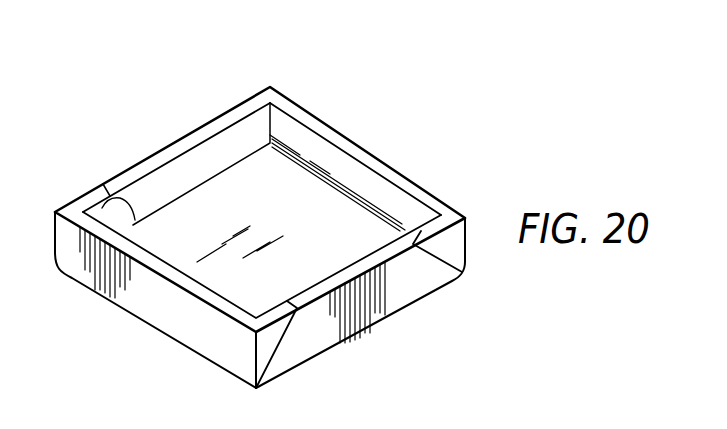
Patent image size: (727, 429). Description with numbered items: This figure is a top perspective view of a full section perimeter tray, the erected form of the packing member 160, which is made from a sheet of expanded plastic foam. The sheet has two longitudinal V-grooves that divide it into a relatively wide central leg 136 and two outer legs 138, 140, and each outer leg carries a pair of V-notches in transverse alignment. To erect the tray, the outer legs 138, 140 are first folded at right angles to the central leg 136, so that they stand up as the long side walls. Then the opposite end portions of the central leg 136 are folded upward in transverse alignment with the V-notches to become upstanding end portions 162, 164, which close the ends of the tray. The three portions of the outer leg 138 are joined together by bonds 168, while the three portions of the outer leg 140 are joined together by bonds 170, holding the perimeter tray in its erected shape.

The packing member 160 is at (381, 147).
The outer leg 138 is at (183, 136).
The upstanding end portion 162 is at (412, 185).
The upstanding end portion 164 is at (130, 295).
The outer leg 140 is at (390, 306).
The central leg 136 is at (208, 272).
The bond 168 is at (135, 220).
The bond 170 is at (279, 348).